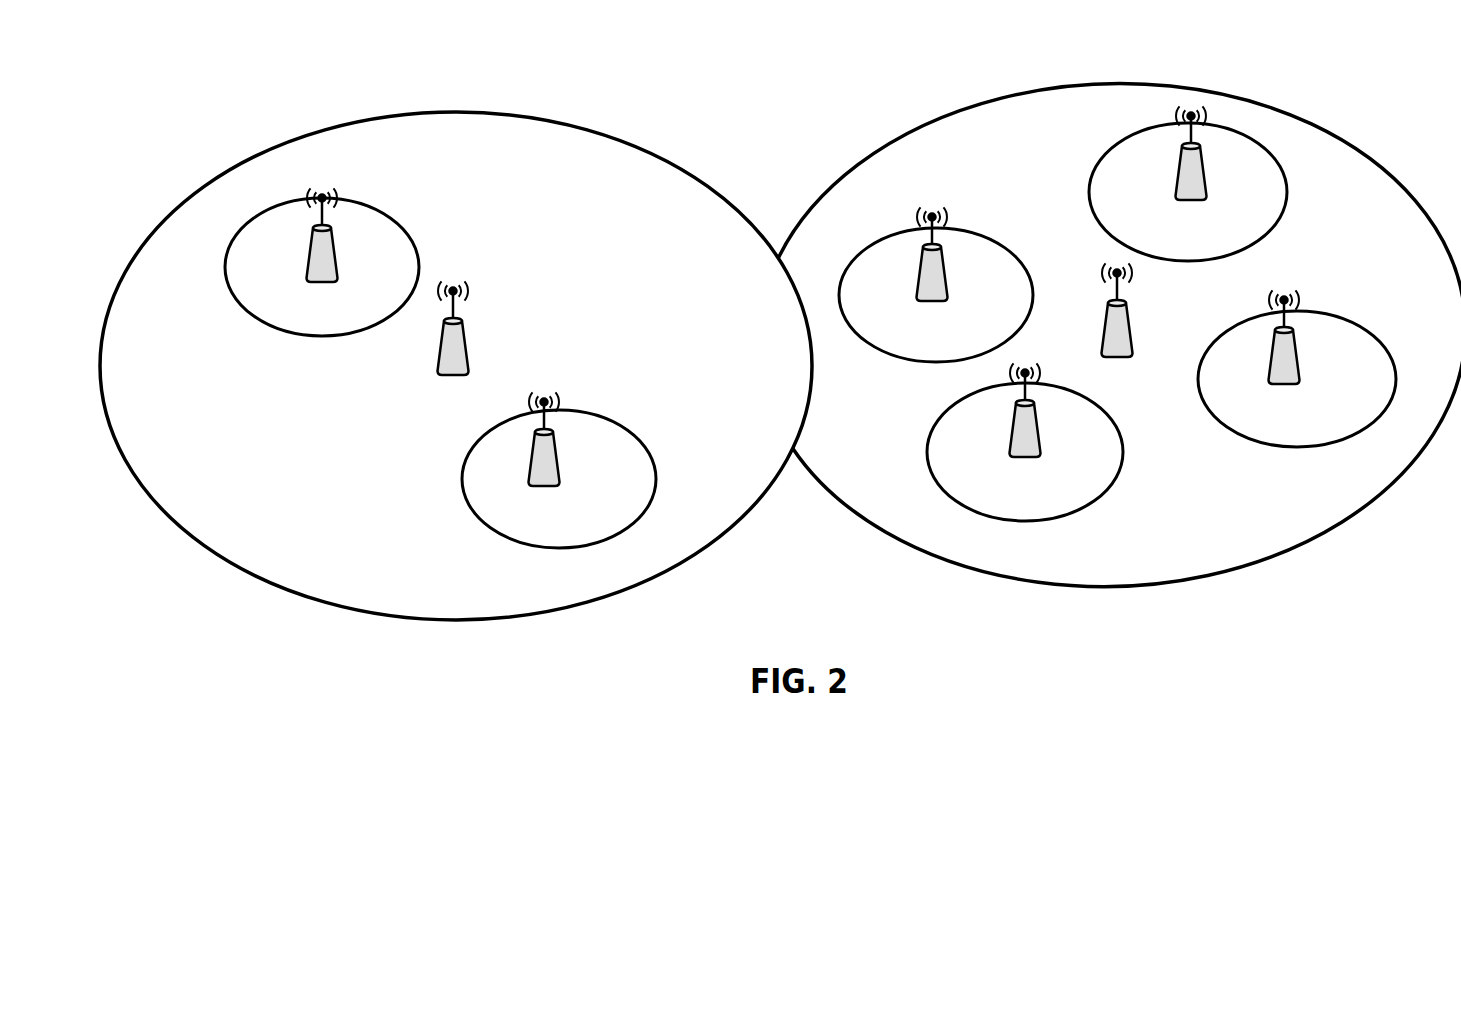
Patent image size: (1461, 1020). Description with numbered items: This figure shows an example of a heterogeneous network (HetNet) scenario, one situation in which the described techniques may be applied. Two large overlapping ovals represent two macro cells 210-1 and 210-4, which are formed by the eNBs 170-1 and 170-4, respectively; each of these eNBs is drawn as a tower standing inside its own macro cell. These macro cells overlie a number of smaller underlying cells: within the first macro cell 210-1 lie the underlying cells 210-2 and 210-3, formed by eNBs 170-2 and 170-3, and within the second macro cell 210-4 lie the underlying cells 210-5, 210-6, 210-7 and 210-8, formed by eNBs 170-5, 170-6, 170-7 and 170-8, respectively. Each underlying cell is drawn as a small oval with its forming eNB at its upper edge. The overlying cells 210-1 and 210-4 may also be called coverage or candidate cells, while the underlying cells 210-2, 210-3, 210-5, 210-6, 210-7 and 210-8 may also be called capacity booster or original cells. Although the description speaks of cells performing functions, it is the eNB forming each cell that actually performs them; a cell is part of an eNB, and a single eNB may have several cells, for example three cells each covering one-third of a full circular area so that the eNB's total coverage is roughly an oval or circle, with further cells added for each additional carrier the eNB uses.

The macro cell 210-1 is at (515, 124).
The underlying cell 210-2 is at (388, 245).
The underlying cell 210-3 is at (612, 437).
The macro cell 210-4 is at (940, 122).
The underlying cell 210-5 is at (938, 362).
The underlying cell 210-6 is at (1245, 208).
The underlying cell 210-7 is at (1345, 347).
The underlying cell 210-8 is at (1080, 449).
The eNB 170-1 is at (468, 298).
The eNB 170-2 is at (340, 193).
The eNB 170-3 is at (545, 393).
The eNB 170-4 is at (1120, 318).
The eNB 170-5 is at (940, 212).
The eNB 170-6 is at (1202, 106).
The eNB 170-7 is at (1294, 292).
The eNB 170-8 is at (1022, 367).